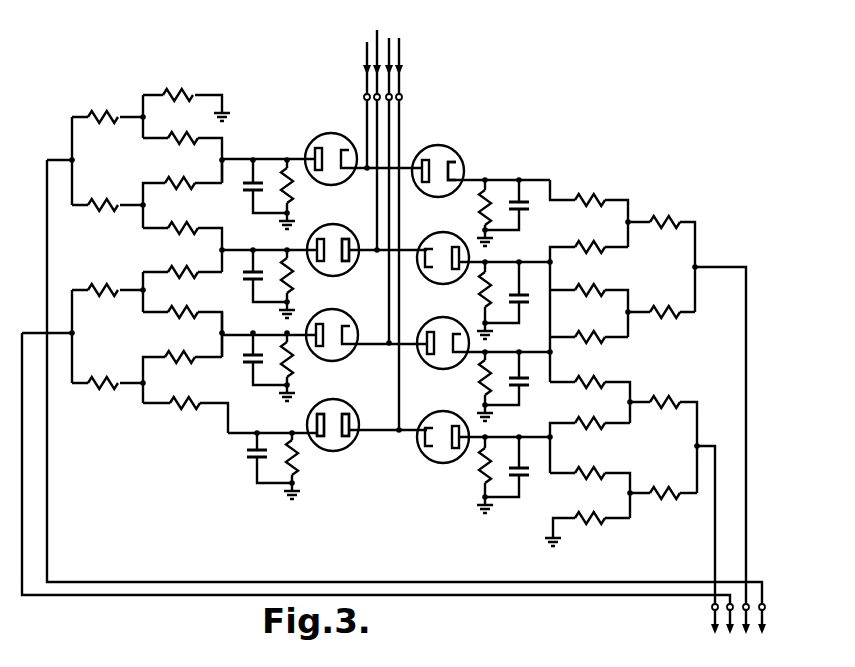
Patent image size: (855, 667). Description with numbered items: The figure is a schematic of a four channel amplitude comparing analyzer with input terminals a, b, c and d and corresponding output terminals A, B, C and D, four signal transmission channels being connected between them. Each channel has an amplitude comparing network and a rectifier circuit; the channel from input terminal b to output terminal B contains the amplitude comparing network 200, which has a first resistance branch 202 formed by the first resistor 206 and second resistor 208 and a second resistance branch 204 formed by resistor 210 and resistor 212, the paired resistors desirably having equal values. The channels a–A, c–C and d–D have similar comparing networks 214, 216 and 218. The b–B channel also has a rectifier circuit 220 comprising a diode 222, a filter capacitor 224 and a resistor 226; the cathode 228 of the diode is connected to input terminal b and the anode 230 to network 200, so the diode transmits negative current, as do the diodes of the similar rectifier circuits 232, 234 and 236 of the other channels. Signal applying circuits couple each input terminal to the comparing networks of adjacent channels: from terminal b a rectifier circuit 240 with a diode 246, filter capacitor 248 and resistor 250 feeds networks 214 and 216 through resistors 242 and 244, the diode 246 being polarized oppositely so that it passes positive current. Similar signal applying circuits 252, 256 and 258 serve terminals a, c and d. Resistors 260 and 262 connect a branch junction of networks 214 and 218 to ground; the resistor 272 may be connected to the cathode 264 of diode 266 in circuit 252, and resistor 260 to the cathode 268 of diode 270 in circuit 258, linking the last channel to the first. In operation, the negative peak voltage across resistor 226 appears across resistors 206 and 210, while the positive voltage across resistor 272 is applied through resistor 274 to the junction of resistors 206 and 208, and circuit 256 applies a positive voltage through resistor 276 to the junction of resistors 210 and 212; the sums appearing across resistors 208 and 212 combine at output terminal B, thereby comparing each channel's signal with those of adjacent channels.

The amplitude comparing network 200 is at (678, 282).
The first resistance branch 202 is at (636, 217).
The second resistance branch 204 is at (637, 318).
The first resistor 206 is at (588, 244).
The second resistor 208 is at (653, 226).
The resistor 210 is at (590, 289).
The resistor 212 is at (650, 312).
The amplitude comparing network 214 is at (157, 172).
The amplitude comparing network 216 is at (144, 346).
The amplitude comparing network 218 is at (672, 462).
The rectifier circuit 220 is at (496, 258).
The diode 222 is at (438, 318).
The filter capacitor 224 is at (528, 305).
The resistor 226 is at (482, 296).
The cathode 228 is at (442, 240).
The anode 230 is at (476, 232).
The rectifier circuit 232 is at (299, 146).
The rectifier circuit 234 is at (350, 312).
The rectifier circuit 236 is at (497, 435).
The rectifier circuit 240 is at (306, 236).
The resistor 242 is at (180, 248).
The resistor 244 is at (165, 271).
The diode 246 is at (344, 266).
The filter capacitor 248 is at (248, 285).
The resistor 250 is at (274, 249).
The signal applying circuit 252 is at (495, 181).
The signal applying circuit 256 is at (497, 350).
The signal applying circuit 258 is at (311, 410).
The resistor 260 is at (176, 94).
The resistor 262 is at (612, 521).
The cathode 264 is at (478, 175).
The diode 266 is at (448, 160).
The cathode 268 is at (320, 440).
The diode 270 is at (360, 435).
The resistor 272 is at (488, 208).
The resistor 274 is at (586, 199).
The resistor 276 is at (599, 338).
The input terminal a is at (366, 54).
The input terminal b is at (376, 42).
The input terminal c is at (389, 52).
The input terminal d is at (400, 46).
The output terminal A is at (757, 636).
The output terminal B is at (744, 636).
The output terminal C is at (728, 636).
The output terminal D is at (710, 626).